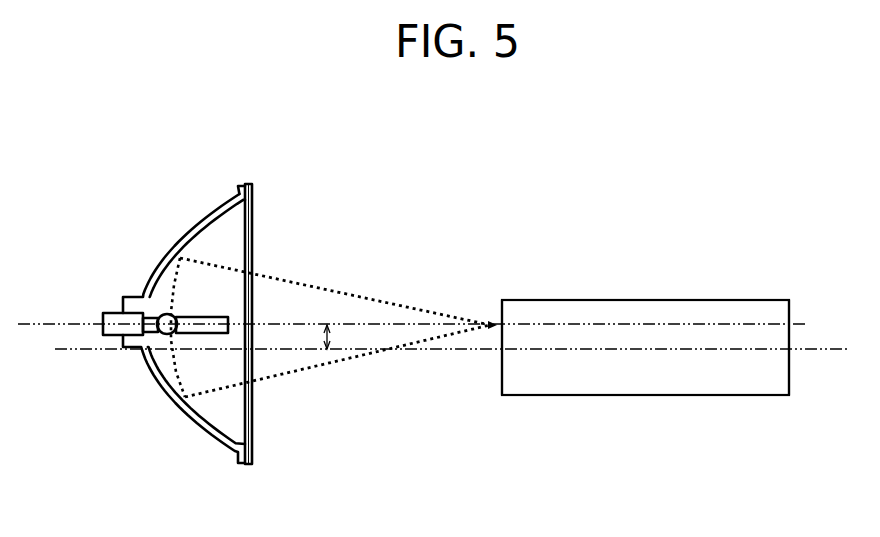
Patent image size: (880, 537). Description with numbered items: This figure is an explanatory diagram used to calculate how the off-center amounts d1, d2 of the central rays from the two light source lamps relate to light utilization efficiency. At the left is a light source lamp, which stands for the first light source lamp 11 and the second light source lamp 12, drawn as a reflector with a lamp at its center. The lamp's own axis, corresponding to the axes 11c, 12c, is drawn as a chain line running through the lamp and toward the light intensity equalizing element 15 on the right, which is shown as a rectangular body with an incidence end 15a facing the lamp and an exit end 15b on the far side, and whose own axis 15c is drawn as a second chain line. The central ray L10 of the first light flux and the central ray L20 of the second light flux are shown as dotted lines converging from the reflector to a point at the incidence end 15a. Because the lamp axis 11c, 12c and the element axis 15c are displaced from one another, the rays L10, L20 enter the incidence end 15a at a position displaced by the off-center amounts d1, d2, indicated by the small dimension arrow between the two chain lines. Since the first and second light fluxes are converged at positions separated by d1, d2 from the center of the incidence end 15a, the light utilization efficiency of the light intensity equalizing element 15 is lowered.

The first light source lamp 11 is at (188, 282).
The second light source lamp 12 is at (210, 212).
The optical axis of reflector 11c is at (411, 283).
The optical axis of reflector 12c is at (87, 312).
The light intensity equalizing element 15 is at (678, 300).
The incidence end 15a is at (502, 377).
The exit end 15b is at (789, 377).
The axis of light guide 15c is at (843, 350).
The central ray of the first light flux L10 is at (346, 294).
The central ray of the second light flux L20 is at (430, 325).
The off-center amount d1 is at (355, 282).
The off-center amount d2 is at (327, 337).